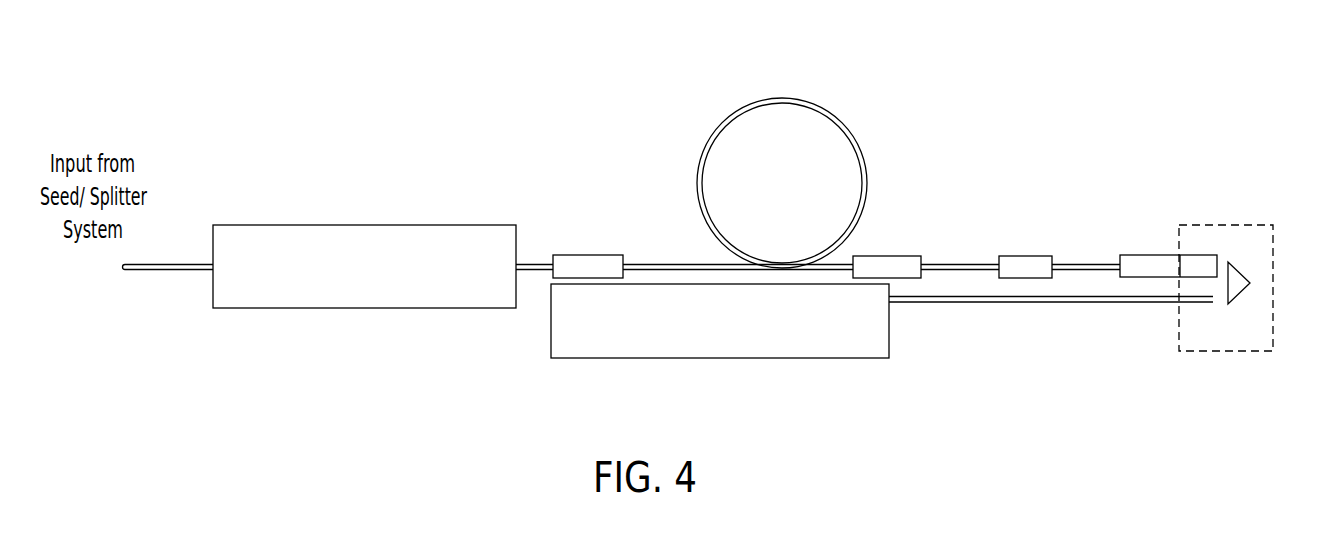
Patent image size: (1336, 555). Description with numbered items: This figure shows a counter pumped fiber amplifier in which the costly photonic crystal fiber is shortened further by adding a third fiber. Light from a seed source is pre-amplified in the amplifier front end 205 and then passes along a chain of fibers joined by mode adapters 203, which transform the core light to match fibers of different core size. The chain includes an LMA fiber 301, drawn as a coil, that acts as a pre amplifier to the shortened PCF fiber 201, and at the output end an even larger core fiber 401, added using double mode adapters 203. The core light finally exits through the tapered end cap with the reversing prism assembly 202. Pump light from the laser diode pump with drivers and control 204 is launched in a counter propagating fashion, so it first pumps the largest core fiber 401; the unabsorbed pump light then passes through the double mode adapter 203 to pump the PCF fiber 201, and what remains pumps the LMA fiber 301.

The PCF fiber 201 is at (953, 240).
The reversing prism assembly 202 is at (1237, 285).
The mode adapter 203 is at (588, 253).
The laser diode pump with drivers and control 204 is at (819, 342).
The amplifier front end 205 is at (413, 236).
The LMA fiber 301 is at (782, 98).
The core fiber 401 is at (1091, 240).